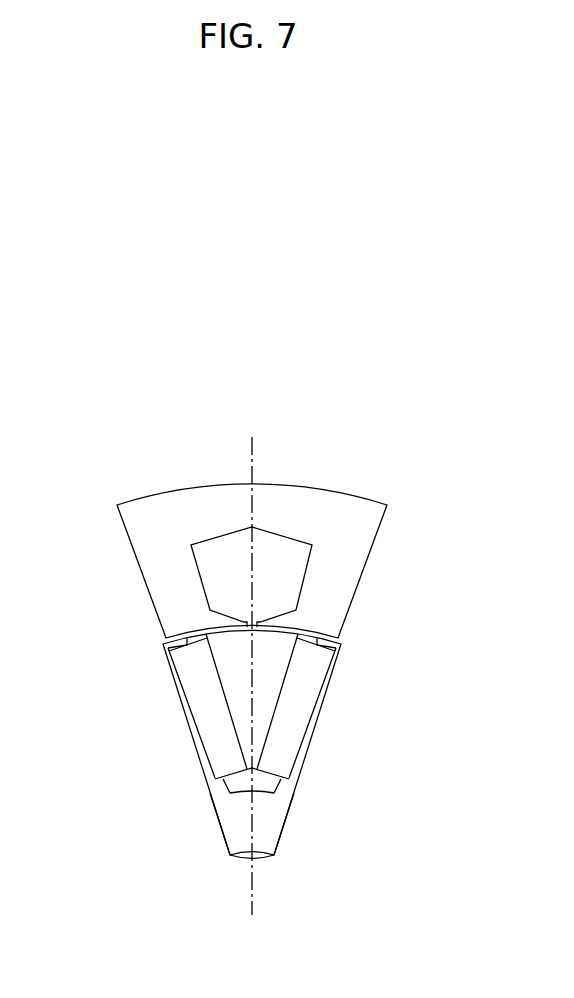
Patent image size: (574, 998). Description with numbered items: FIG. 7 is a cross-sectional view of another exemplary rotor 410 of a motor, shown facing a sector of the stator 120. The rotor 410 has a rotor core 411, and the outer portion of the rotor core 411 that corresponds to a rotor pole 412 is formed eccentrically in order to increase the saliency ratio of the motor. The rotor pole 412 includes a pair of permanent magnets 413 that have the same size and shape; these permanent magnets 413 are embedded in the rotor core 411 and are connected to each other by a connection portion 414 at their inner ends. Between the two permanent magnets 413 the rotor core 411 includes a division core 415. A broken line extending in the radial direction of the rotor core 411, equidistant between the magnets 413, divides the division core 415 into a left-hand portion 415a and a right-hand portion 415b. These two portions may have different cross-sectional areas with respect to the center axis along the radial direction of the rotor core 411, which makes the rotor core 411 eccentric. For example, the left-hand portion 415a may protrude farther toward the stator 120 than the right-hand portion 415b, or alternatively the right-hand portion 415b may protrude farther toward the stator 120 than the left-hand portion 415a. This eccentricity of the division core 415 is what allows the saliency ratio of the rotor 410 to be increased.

The stator 120 is at (355, 553).
The rotor 410 is at (235, 745).
The rotor core 411 is at (275, 832).
The rotor pole 412 is at (284, 653).
The permanent magnets 413 is at (277, 747).
The connection portion 414 is at (272, 788).
The division core 415 is at (193, 677).
The left-hand portion 415a is at (220, 652).
The right-hand portion 415b is at (263, 677).